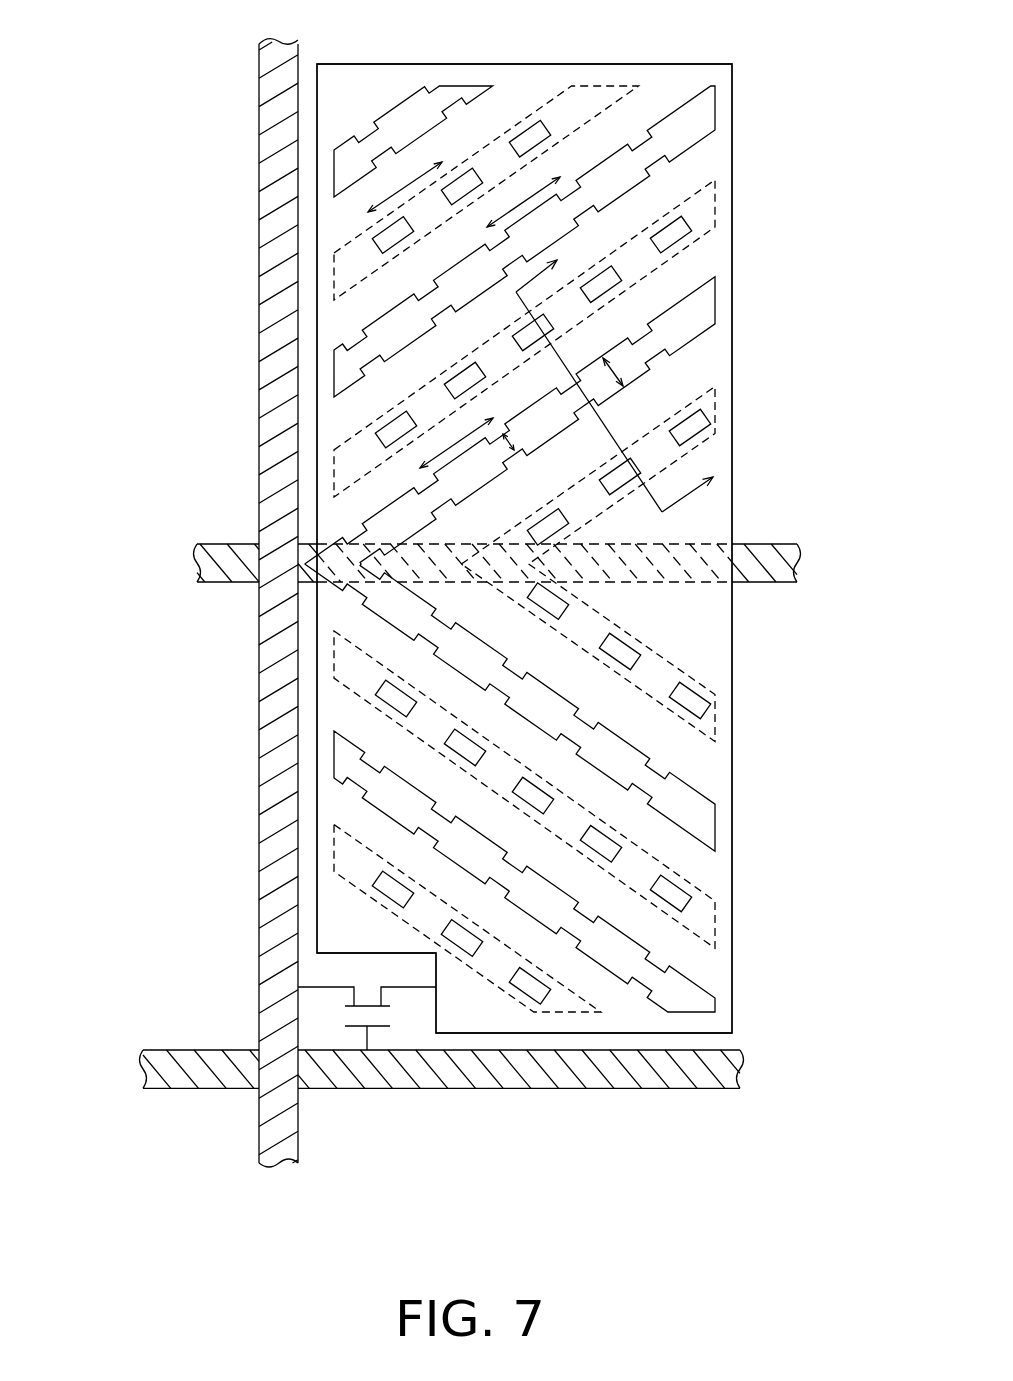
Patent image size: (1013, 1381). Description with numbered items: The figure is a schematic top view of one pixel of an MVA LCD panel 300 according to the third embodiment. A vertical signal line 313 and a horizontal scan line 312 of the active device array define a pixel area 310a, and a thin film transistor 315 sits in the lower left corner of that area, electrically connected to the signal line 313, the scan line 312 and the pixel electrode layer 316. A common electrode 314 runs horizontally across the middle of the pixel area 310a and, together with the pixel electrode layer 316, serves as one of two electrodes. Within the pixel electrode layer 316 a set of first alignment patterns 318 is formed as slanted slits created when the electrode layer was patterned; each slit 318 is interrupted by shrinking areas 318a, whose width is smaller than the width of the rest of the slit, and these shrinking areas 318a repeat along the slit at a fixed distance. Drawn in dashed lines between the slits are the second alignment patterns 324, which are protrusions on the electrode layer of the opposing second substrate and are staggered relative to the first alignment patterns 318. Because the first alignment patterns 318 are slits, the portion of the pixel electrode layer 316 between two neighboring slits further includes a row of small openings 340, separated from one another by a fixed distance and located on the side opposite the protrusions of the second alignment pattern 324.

The MVA LCD panel 300 is at (470, 628).
The pixel area 310a is at (752, 938).
The scan line 312 is at (153, 1067).
The signal line 313 is at (280, 1158).
The common electrode 314 is at (780, 561).
The thin film transistor 315 is at (325, 1024).
The pixel electrode layer 316 is at (698, 628).
The first alignment pattern 318 is at (655, 161).
The shrinking area 318a is at (704, 121).
The second alignment pattern 324 is at (609, 87).
The opening 340 is at (526, 132).